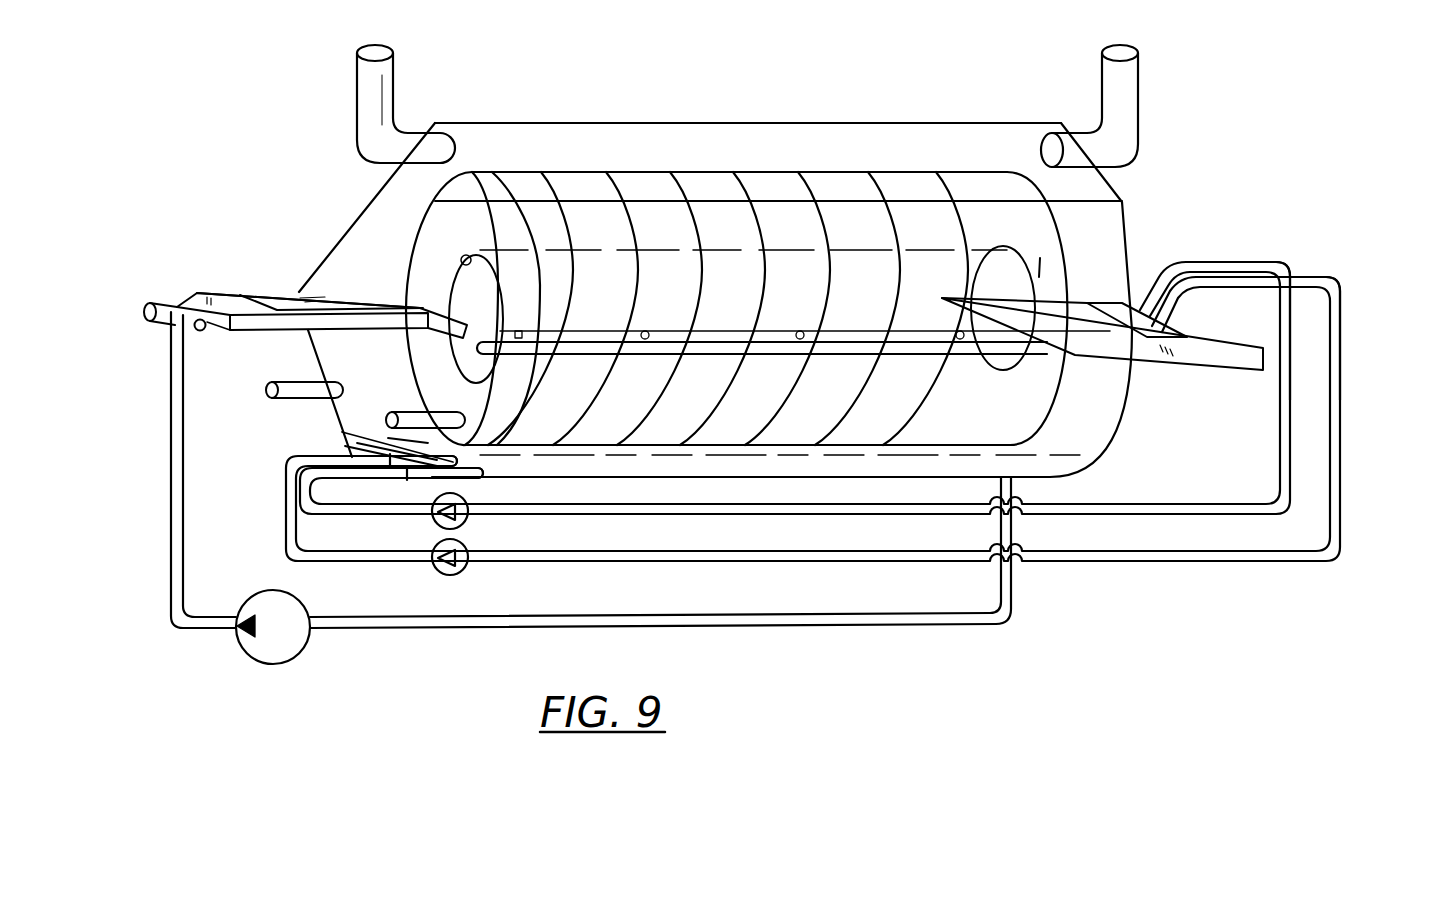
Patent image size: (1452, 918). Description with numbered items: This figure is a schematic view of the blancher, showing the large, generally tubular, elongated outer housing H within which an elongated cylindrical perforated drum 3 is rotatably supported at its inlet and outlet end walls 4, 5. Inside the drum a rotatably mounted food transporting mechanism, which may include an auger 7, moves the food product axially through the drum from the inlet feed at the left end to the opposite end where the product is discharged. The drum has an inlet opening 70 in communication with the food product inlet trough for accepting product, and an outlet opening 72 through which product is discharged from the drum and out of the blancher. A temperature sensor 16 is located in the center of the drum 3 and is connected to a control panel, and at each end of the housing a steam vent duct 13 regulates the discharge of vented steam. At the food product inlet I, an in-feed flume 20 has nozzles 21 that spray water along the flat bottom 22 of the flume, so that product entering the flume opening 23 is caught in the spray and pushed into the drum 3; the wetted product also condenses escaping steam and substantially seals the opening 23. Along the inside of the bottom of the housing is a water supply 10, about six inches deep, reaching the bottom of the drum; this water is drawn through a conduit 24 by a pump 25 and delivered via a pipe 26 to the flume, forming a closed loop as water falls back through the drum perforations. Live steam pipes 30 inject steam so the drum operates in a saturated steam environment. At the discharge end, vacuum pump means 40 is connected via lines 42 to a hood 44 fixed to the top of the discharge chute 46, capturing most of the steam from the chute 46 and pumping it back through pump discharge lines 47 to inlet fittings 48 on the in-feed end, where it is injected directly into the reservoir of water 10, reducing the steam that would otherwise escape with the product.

The perforated drum 3 is at (850, 170).
The outer housing H is at (737, 120).
The auger 7 is at (618, 183).
The inlet end wall 4 is at (440, 202).
The outlet end wall 5 is at (1063, 240).
The inlet opening 70 is at (461, 259).
The outlet opening 72 is at (1040, 366).
The temperature sensor 16 is at (742, 300).
The steam vent duct 13 is at (357, 87).
The flat bottom of the flume 22 is at (254, 331).
The in-feed flume 20 is at (285, 295).
The nozzles 21 is at (206, 332).
The flume opening 23 is at (222, 305).
The food product inlet I is at (264, 268).
The live steam pipes 30 is at (416, 412).
The water supply 10 is at (350, 445).
The conduit 24 is at (185, 475).
The pump 25 is at (277, 663).
The pipe 26 is at (913, 626).
The vacuum pump means 40 is at (470, 552).
The pump discharge lines 47 is at (392, 556).
The inlet fittings 48 is at (462, 474).
The lines 42 is at (1291, 387).
The discharge chute 46 is at (1224, 363).
The hood 44 is at (1163, 330).